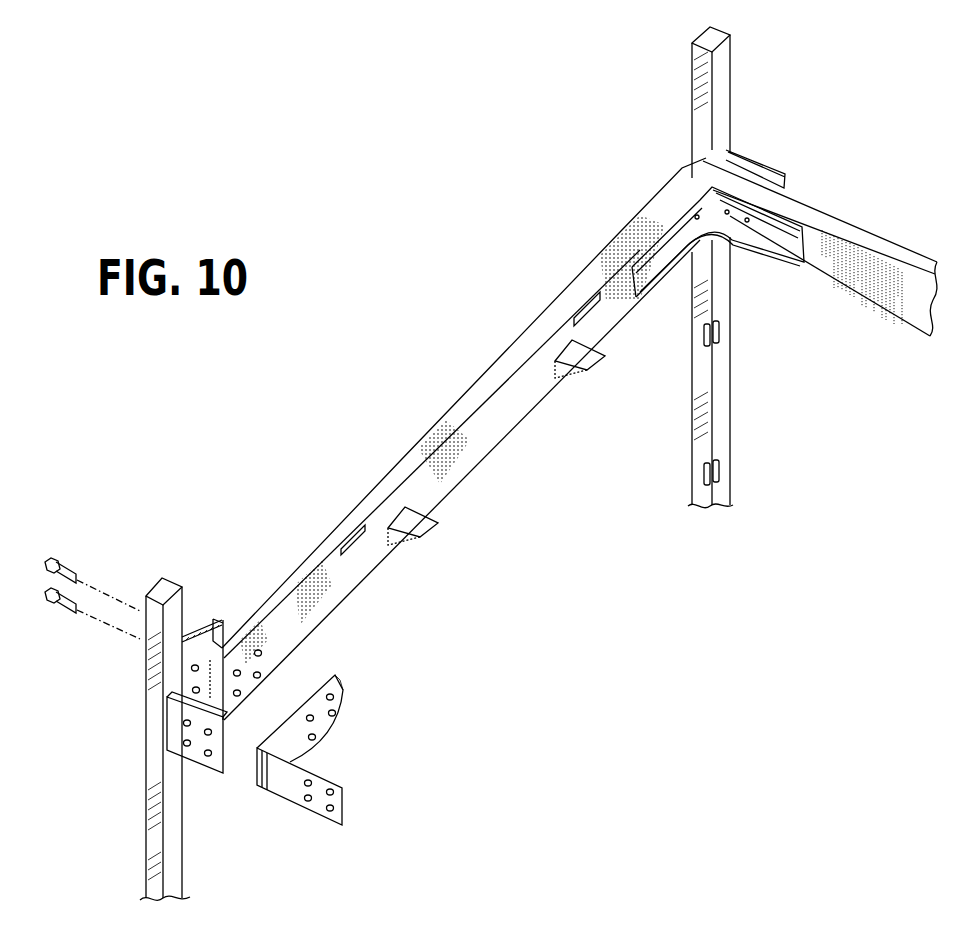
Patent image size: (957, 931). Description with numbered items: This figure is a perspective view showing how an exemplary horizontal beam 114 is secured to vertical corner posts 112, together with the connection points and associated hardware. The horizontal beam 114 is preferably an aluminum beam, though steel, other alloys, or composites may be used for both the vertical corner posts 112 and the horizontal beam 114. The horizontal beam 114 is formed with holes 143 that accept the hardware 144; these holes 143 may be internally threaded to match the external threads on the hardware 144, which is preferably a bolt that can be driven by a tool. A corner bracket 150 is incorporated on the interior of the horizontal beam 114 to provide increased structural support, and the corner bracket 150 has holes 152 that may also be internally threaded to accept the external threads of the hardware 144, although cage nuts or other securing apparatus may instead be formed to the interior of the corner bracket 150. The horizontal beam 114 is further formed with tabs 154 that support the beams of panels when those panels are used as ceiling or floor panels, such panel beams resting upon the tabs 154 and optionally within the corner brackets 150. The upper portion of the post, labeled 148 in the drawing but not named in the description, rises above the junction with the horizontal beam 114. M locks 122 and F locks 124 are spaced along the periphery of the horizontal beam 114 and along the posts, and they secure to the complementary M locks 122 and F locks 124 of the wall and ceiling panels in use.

The vertical corner post 112 is at (722, 388).
The horizontal beam 114 is at (493, 407).
The M lock 122 is at (582, 300).
The F lock 124 is at (338, 540).
The hole 143 is at (268, 643).
The hardware 144 is at (77, 560).
The post top 148 is at (730, 80).
The corner bracket 150 is at (700, 180).
The hole 152 is at (340, 703).
The tab 154 is at (420, 535).